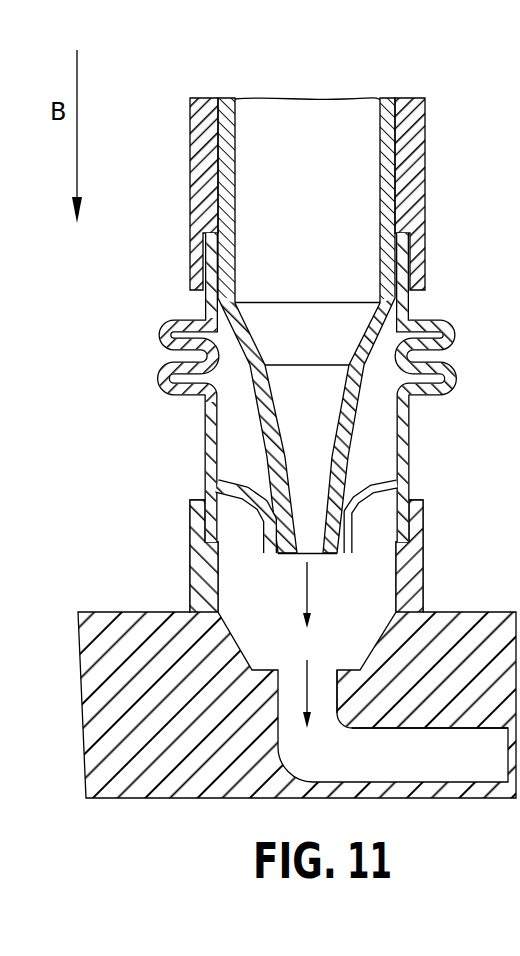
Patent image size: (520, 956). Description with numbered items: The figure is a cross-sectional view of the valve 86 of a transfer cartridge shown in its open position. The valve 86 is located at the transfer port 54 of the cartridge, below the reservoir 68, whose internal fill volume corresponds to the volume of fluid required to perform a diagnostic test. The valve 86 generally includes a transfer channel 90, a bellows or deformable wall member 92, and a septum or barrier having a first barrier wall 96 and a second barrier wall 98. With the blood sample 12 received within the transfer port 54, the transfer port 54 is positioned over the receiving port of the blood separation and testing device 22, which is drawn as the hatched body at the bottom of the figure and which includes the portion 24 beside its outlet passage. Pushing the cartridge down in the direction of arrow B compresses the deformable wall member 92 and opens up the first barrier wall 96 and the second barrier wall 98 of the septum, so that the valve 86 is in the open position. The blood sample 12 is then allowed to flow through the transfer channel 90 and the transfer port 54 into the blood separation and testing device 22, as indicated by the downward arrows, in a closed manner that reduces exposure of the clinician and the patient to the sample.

The blood sample 12 is at (308, 589).
The blood separation and testing device 22 is at (117, 611).
The outlet channel portion 24 is at (453, 750).
The transfer port 54 is at (190, 153).
The reservoir 68 is at (304, 126).
The valve 86 is at (142, 347).
The transfer channel 90 is at (357, 422).
The deformable wall member 92 is at (452, 340).
The first barrier wall 96 is at (262, 520).
The second barrier wall 98 is at (350, 526).